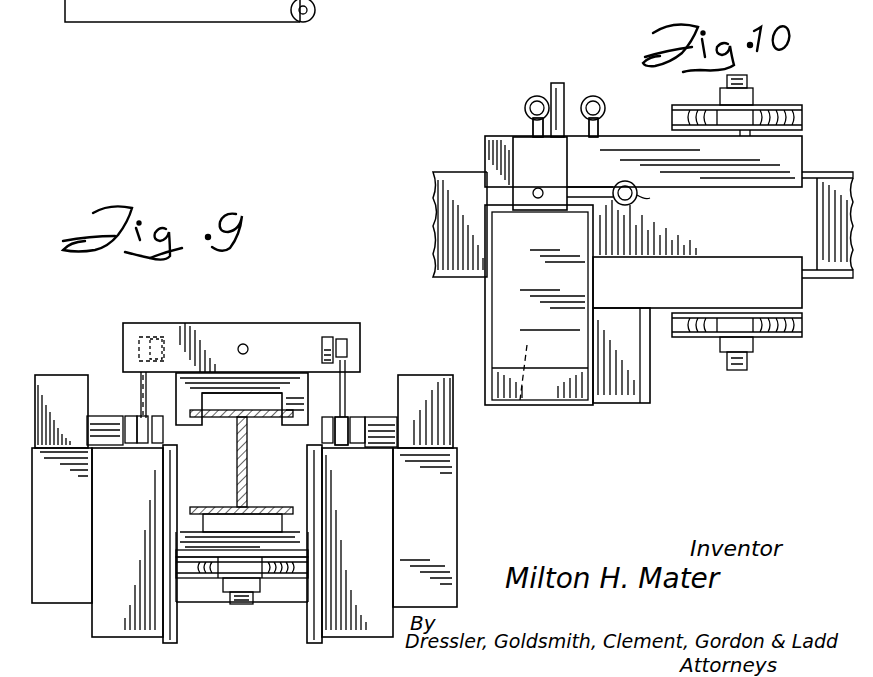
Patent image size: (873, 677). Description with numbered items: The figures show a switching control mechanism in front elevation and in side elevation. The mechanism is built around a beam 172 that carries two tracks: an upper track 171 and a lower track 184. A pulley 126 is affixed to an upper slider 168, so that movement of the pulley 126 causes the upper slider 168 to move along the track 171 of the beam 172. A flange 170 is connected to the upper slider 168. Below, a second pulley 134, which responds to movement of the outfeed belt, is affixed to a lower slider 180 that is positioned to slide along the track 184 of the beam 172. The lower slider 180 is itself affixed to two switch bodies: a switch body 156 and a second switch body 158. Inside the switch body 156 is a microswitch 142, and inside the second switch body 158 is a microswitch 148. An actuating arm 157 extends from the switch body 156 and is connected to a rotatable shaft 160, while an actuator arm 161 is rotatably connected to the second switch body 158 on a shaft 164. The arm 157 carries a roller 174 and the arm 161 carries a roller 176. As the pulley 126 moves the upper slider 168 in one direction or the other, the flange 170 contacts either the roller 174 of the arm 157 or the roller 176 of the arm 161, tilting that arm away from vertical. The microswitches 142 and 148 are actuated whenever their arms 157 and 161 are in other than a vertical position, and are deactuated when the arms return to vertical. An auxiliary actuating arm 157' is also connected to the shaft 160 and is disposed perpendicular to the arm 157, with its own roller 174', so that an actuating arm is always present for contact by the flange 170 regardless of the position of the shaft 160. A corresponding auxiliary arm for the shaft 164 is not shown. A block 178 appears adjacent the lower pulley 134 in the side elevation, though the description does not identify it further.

In FIG. 10, the pulley 126 is at (705, 117).
In FIG. 9, the pulley 134 is at (275, 572).
In FIG. 10, the pulley 134 is at (775, 330).
In FIG. 9, the microswitch 142 is at (420, 520).
In FIG. 10, the microswitch 142 is at (520, 402).
In FIG. 9, the microswitch 148 is at (60, 500).
In FIG. 9, the switch body 156 is at (435, 558).
In FIG. 10, the switch body 156 is at (508, 305).
In FIG. 9, the actuating arm 157 is at (359, 403).
In FIG. 10, the actuating arm 157 is at (510, 120).
In FIG. 10, the auxiliary actuating arm 157' is at (605, 213).
In FIG. 9, the second switch body 158 is at (52, 585).
In FIG. 9, the rotatable shaft 160 is at (348, 447).
In FIG. 10, the rotatable shaft 160 is at (539, 198).
In FIG. 9, the actuator arm 161 is at (141, 406).
In FIG. 10, the actuator arm 161 is at (600, 130).
In FIG. 9, the shaft 164 is at (142, 445).
In FIG. 9, the upper slider 168 is at (253, 380).
In FIG. 10, the upper slider 168 is at (712, 173).
In FIG. 9, the flange 170 is at (268, 340).
In FIG. 10, the flange 170 is at (561, 90).
In FIG. 9, the track 171 is at (222, 420).
In FIG. 9, the beam 172 is at (240, 472).
In FIG. 10, the beam 172 is at (453, 225).
In FIG. 9, the roller 174 is at (349, 328).
In FIG. 10, the roller 174 is at (523, 102).
In FIG. 10, the roller 174' is at (652, 197).
In FIG. 9, the roller 176 is at (158, 336).
In FIG. 10, the roller 176 is at (585, 97).
In FIG. 10, the lower block 178 is at (665, 283).
In FIG. 9, the lower slider 180 is at (200, 590).
In FIG. 9, the track 184 is at (268, 507).
In FIG. 10, the track 184 is at (815, 270).